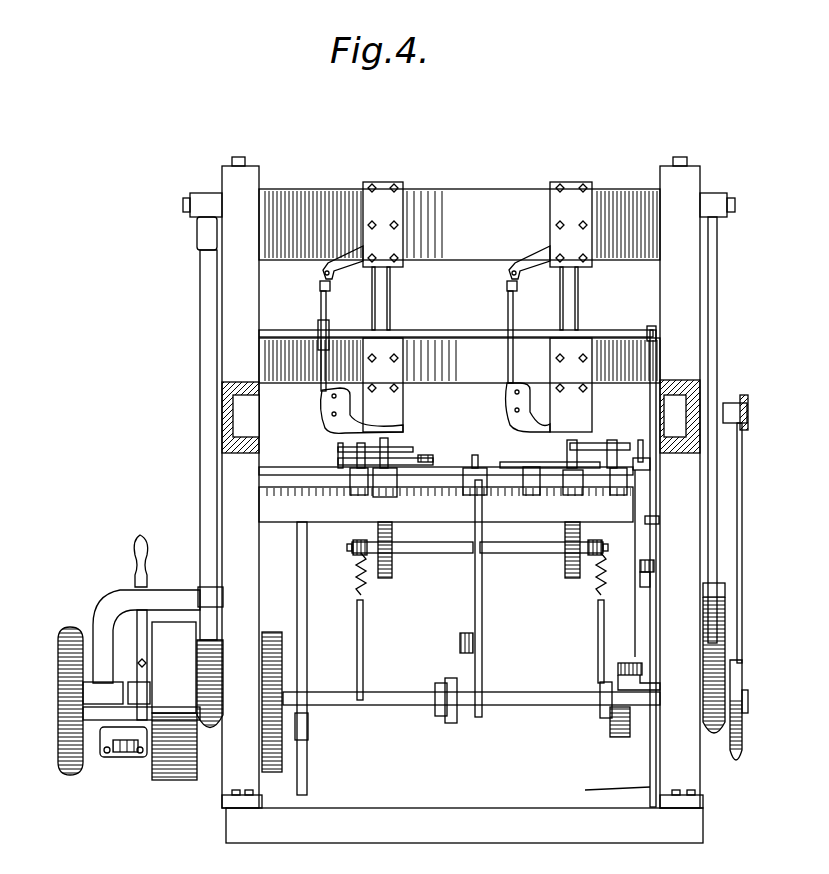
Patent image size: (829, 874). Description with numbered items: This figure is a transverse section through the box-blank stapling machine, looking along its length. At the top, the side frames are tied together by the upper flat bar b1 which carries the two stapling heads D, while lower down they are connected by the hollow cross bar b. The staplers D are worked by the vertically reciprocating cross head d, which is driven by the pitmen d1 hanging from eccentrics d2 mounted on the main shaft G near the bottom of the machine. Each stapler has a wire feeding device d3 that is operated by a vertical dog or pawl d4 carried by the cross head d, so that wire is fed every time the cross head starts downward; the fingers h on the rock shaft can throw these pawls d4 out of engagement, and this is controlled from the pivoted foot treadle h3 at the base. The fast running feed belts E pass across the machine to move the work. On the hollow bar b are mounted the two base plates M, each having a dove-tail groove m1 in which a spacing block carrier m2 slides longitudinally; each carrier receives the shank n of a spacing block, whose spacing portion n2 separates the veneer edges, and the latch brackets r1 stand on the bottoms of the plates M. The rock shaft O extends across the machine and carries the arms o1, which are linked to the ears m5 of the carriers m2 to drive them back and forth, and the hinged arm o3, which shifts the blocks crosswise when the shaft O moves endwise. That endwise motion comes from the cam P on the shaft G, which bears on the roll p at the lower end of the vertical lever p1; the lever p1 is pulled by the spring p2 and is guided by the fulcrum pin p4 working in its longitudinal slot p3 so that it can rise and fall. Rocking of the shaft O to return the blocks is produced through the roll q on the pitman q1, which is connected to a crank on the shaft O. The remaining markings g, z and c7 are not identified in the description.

The reciprocating bar or cross head d is at (490, 201).
The pitmen d1 is at (215, 415).
The eccentrics d2 is at (203, 737).
The wire feeding devices d3 is at (337, 430).
The vertical reciprocating dog or pawl d4 is at (310, 366).
The stapling heads D is at (402, 420).
The shank n is at (352, 440).
The spacing portion n2 is at (382, 445).
The hollow cross bar b is at (335, 528).
The upper flat bar b1 is at (447, 352).
The ears m5 is at (393, 450).
The arms o1 is at (398, 458).
The dove-tail groove m1 is at (393, 462).
The arm o3 is at (355, 490).
The arm g is at (400, 492).
The rock shaft O is at (537, 495).
The spacing block carrier m2 is at (545, 470).
The pin z is at (502, 439).
The base plates M is at (499, 461).
The rod c7 is at (612, 460).
The brackets r1 is at (645, 445).
The feed belts E is at (395, 546).
The pitman q1 is at (480, 600).
The roll q is at (471, 643).
The shaft G is at (376, 695).
The cam P is at (614, 737).
The roll p is at (620, 663).
The vertically disposed lever p1 is at (620, 613).
The spring p2 is at (657, 524).
The longitudinal slot p3 is at (655, 567).
The pivot or fulcrum pin p4 is at (652, 585).
The fingers h is at (657, 692).
The foot treadle h3 is at (602, 785).